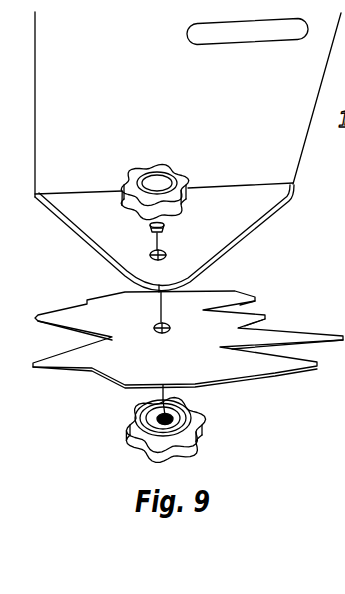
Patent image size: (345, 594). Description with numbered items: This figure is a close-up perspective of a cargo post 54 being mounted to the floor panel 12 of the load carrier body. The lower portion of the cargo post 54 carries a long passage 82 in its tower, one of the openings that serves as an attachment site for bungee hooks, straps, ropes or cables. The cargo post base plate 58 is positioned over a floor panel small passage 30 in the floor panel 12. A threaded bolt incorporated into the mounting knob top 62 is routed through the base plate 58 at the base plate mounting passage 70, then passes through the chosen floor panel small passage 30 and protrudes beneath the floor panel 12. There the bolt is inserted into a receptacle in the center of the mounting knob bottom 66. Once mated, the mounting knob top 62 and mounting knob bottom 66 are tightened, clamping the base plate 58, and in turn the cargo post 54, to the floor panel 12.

The cargo post 54 is at (121, 41).
The long passage 82 is at (193, 46).
The base plate mounting passage 70 is at (149, 250).
The mounting knob top 62 is at (168, 228).
The cargo post base plate 58 is at (127, 253).
The floor panel small passage 30 is at (178, 327).
The floor panel 12 is at (143, 376).
The mounting knob bottom 66 is at (192, 413).